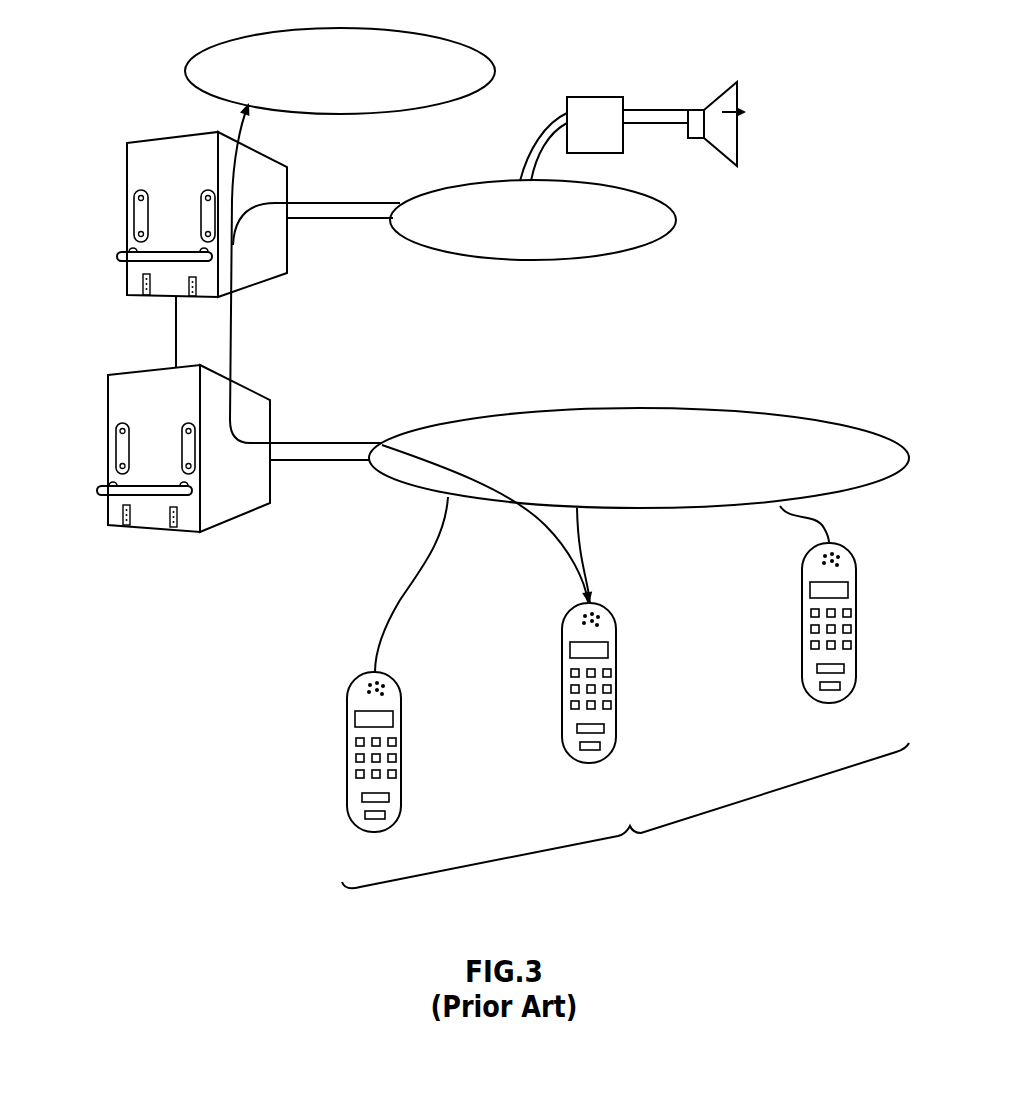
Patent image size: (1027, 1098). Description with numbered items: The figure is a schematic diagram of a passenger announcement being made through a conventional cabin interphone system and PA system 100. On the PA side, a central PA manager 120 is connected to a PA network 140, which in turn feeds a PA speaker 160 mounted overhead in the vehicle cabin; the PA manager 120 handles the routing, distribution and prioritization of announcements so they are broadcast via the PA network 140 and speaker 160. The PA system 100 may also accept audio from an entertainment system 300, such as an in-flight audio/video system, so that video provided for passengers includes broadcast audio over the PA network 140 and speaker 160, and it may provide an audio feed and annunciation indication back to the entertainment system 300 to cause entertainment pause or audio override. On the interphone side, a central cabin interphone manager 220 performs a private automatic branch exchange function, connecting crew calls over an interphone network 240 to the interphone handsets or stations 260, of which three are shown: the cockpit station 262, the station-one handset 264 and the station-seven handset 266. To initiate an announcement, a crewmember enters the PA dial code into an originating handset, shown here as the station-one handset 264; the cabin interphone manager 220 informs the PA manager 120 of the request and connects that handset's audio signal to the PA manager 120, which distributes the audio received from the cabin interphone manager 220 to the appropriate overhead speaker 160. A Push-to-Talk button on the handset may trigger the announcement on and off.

The PA system 100 is at (664, 264).
The PA manager 120 is at (142, 158).
The PA network 140 is at (498, 181).
The PA speaker 160 is at (728, 93).
The cabin interphone manager 220 is at (120, 401).
The interphone network 240 is at (625, 508).
The interphone handsets or stations 260 is at (629, 692).
The cockpit station 262 is at (402, 773).
The station 1 264 is at (616, 724).
The station 7 266 is at (856, 654).
The entertainment system 300 is at (457, 42).